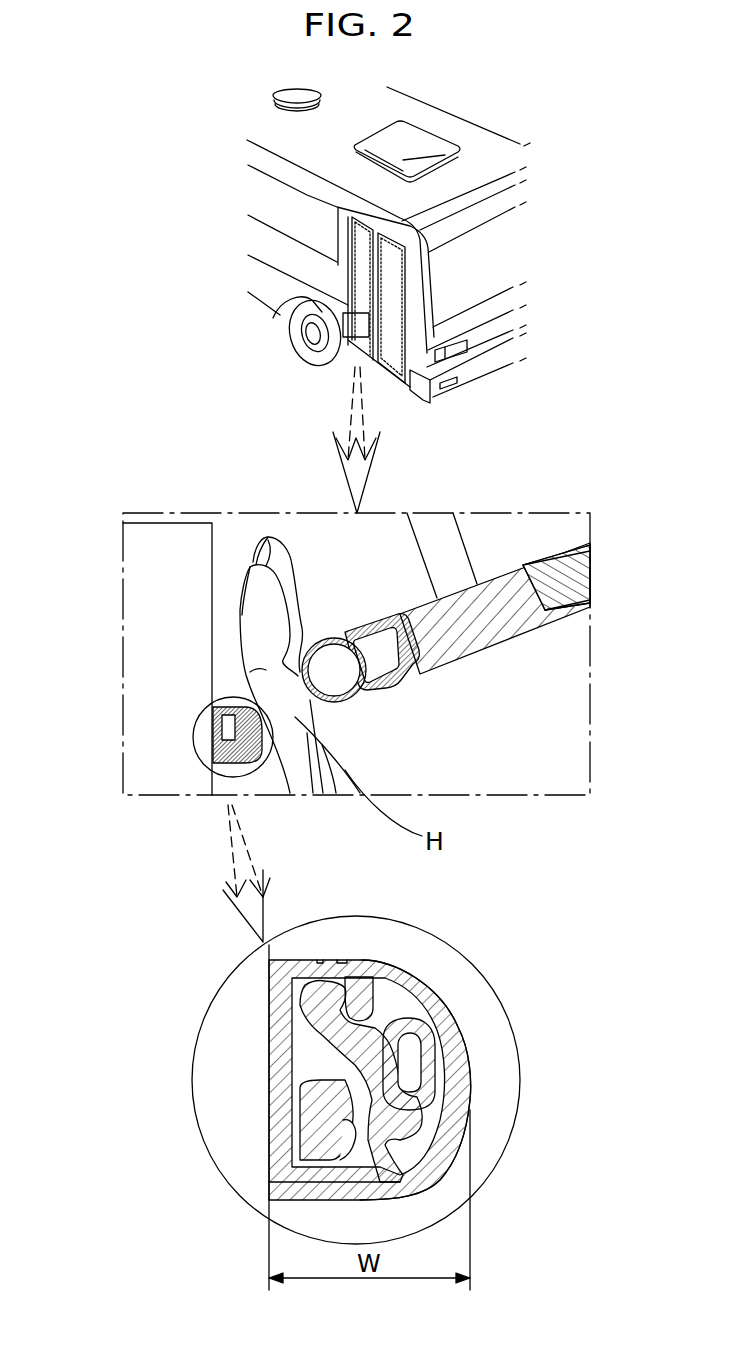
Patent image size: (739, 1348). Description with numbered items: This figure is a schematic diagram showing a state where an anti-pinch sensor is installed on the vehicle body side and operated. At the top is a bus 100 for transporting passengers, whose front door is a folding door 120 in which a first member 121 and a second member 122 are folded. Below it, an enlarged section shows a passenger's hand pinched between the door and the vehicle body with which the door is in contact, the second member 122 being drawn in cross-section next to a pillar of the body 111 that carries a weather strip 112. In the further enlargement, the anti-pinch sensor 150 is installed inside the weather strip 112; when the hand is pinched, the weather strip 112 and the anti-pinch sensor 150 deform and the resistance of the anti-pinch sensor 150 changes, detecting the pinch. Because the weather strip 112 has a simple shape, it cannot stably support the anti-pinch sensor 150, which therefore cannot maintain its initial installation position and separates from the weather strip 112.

The bus 100 is at (490, 113).
The folding door 120 is at (163, 263).
The first member 121 is at (387, 280).
The second member 122 is at (360, 250).
The door frame pillar 111 is at (193, 535).
The weather strip 112 is at (340, 916).
The anti-pinch sensor 150 is at (425, 1027).